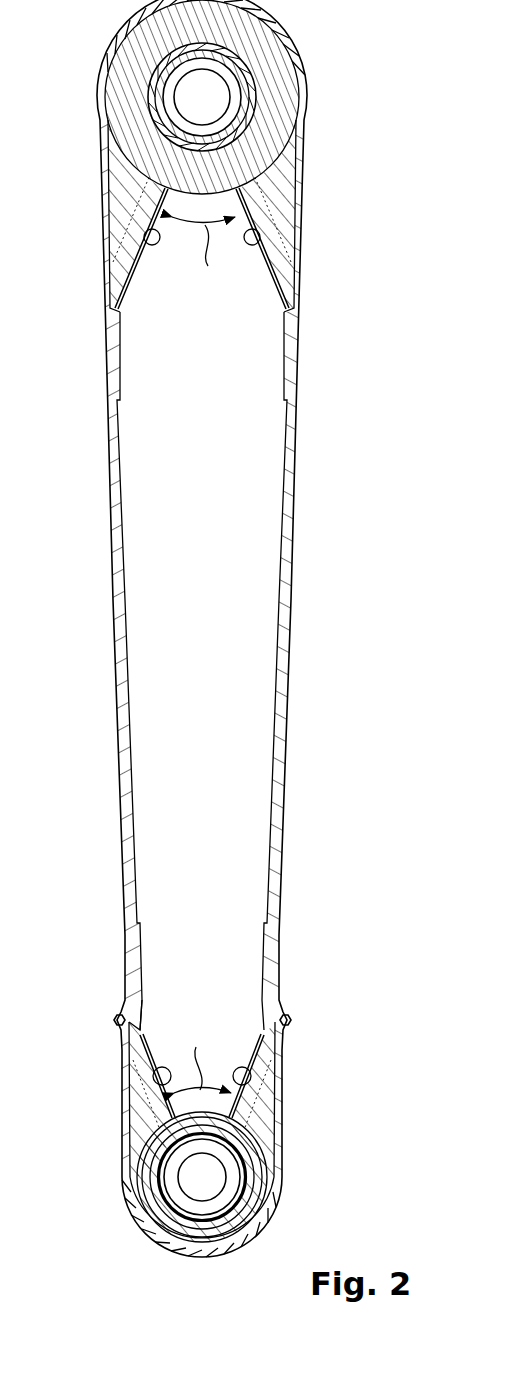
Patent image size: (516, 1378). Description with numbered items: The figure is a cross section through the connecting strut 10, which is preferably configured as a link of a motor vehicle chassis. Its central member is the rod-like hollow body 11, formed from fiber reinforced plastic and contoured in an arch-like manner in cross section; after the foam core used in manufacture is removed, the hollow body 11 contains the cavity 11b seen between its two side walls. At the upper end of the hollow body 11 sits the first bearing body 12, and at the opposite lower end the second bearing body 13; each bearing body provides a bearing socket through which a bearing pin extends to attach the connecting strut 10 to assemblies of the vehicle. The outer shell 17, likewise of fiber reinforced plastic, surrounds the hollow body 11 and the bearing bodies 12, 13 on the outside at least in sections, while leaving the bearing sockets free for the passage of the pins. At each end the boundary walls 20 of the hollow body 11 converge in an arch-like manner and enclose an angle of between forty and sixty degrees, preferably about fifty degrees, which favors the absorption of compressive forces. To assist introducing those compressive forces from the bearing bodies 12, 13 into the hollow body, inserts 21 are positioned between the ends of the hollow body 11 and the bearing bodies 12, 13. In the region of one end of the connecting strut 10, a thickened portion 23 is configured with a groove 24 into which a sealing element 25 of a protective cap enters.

The connecting strut 10 is at (104, 562).
The hollow body 11 is at (129, 503).
The cavity 11b is at (232, 432).
The first bearing body 12 is at (286, 50).
The second bearing body 13 is at (147, 1186).
The outer shell 17 is at (306, 353).
The boundary wall 20 is at (150, 242).
The insert 21 is at (128, 205).
The thickened portion 23 is at (118, 1013).
The groove 24 is at (141, 1022).
The sealing element 25 is at (292, 1022).